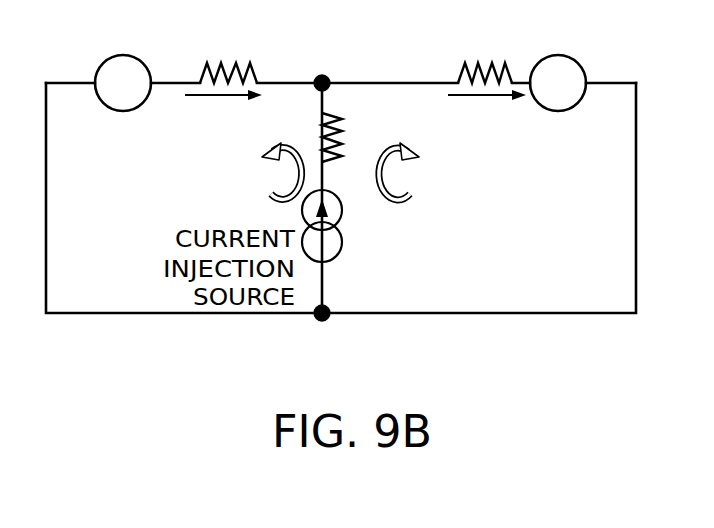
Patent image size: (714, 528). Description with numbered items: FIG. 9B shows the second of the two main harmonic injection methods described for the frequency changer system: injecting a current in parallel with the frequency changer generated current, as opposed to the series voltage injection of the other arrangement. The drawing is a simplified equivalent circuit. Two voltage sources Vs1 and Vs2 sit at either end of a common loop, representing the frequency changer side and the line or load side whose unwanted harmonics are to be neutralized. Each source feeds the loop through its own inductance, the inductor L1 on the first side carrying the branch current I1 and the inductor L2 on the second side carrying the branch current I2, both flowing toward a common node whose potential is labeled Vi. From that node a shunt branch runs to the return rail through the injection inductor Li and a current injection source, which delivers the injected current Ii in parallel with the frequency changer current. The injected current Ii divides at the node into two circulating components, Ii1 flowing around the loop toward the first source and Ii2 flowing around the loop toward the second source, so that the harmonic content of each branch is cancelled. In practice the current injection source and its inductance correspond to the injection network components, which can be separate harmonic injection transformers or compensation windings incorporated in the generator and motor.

The first voltage source Vs1 is at (123, 83).
The second voltage source Vs2 is at (558, 83).
The injection node voltage Vi is at (320, 58).
The first inductor L1 is at (228, 56).
The second inductor L2 is at (485, 55).
The injection inductor Li is at (343, 137).
The first branch current I1 is at (223, 111).
The second branch current I2 is at (487, 112).
The current injection source Ii is at (347, 226).
The injected current component toward source 1 Ii1 is at (264, 171).
The injected current component toward source 2 Ii2 is at (416, 171).